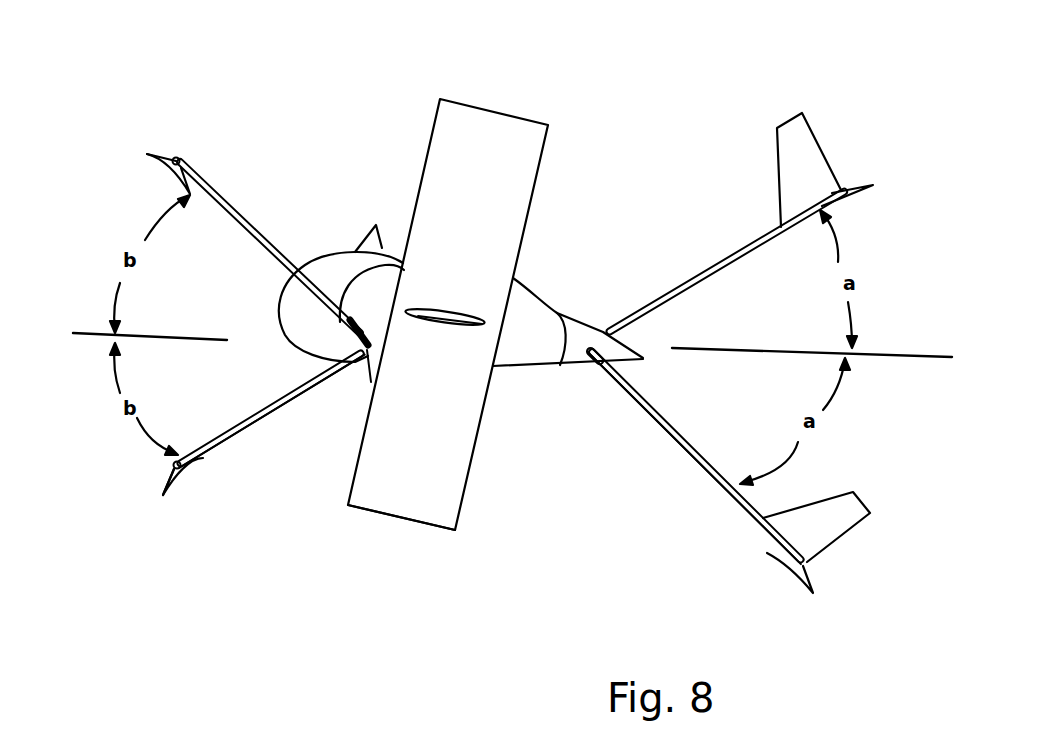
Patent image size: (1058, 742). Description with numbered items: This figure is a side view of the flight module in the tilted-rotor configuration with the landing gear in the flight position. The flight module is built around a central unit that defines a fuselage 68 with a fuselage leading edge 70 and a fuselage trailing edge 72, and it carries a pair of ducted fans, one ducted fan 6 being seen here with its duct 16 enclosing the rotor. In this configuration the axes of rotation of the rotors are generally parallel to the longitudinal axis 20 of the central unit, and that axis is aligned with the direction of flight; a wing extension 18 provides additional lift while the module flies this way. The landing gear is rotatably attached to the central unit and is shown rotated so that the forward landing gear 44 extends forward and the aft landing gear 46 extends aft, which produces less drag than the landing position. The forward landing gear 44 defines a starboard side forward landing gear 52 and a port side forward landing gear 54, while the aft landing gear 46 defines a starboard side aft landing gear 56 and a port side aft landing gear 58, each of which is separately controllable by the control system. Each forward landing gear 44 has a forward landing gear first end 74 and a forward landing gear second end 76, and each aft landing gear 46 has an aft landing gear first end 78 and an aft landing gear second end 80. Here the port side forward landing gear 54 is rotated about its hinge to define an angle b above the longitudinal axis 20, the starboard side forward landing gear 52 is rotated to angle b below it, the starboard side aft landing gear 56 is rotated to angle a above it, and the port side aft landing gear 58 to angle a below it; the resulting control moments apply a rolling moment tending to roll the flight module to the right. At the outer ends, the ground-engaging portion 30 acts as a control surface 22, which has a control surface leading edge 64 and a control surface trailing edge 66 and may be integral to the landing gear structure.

The ducted fan 6 is at (489, 133).
The duct 16 is at (422, 485).
The wing extension 18 is at (449, 330).
The longitudinal axis 20 is at (110, 337).
The control surface 22 is at (800, 147).
The ground-engaging portion 30 is at (147, 153).
The forward landing gear 44 is at (268, 428).
The aft landing gear 46 is at (720, 492).
The starboard side forward landing gear 52 is at (240, 450).
The port side forward landing gear 54 is at (205, 180).
The starboard side aft landing gear 56 is at (733, 254).
The port side aft landing gear 58 is at (700, 473).
The control surface leading edge 64 is at (162, 494).
The control surface trailing edge 66 is at (210, 458).
The fuselage 68 is at (337, 257).
The fuselage leading edge 70 is at (281, 305).
The fuselage trailing edge 72 is at (617, 354).
The forward landing gear first end 74 is at (360, 350).
The forward landing gear second end 76 is at (177, 156).
The aft landing gear first end 78 is at (598, 335).
The aft landing gear second end 80 is at (812, 573).